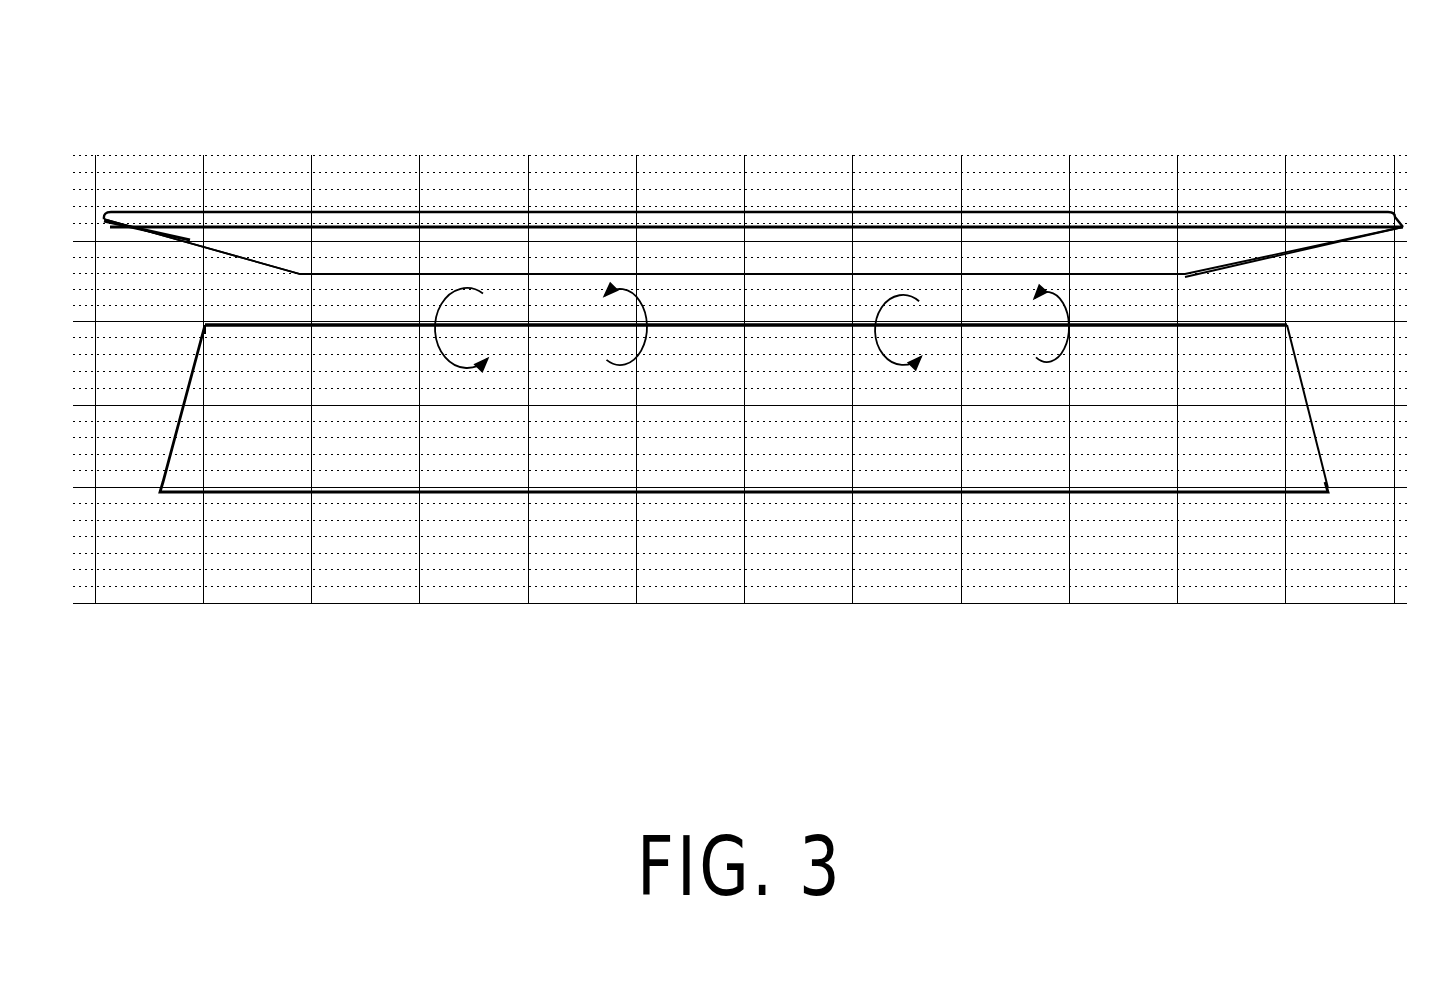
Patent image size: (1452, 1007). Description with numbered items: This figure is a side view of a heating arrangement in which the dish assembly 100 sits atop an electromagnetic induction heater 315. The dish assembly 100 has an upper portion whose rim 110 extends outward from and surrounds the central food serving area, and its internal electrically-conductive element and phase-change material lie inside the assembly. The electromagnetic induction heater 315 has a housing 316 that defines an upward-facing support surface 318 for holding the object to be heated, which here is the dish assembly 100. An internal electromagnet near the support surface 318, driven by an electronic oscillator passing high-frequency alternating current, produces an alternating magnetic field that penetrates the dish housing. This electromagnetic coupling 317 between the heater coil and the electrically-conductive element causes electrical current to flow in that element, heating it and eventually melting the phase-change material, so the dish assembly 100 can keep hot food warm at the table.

The dish assembly 100 is at (620, 208).
The rim 110 is at (169, 246).
The electromagnetic induction heater 315 is at (515, 462).
The housing 316 is at (1285, 440).
The electromagnetic coupling 317 is at (1033, 360).
The support surface 318 is at (253, 330).